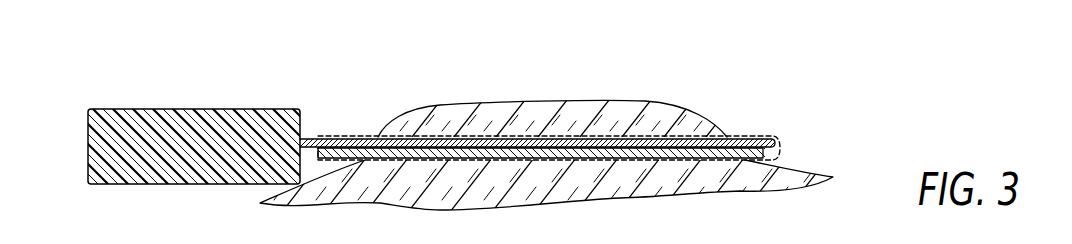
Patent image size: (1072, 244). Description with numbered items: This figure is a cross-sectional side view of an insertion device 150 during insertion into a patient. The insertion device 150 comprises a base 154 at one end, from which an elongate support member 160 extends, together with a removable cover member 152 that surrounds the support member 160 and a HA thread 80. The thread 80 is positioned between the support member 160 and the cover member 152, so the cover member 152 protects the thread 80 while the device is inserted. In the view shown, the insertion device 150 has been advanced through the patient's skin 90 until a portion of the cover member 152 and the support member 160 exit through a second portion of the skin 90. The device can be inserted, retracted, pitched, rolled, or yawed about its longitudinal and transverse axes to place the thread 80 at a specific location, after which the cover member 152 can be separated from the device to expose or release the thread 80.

The insertion device 150 is at (450, 99).
The base 154 is at (180, 110).
The support member 160 is at (755, 138).
The removable cover member 152 is at (785, 148).
The patient's skin 90 is at (628, 104).
The HA thread 80 is at (512, 160).